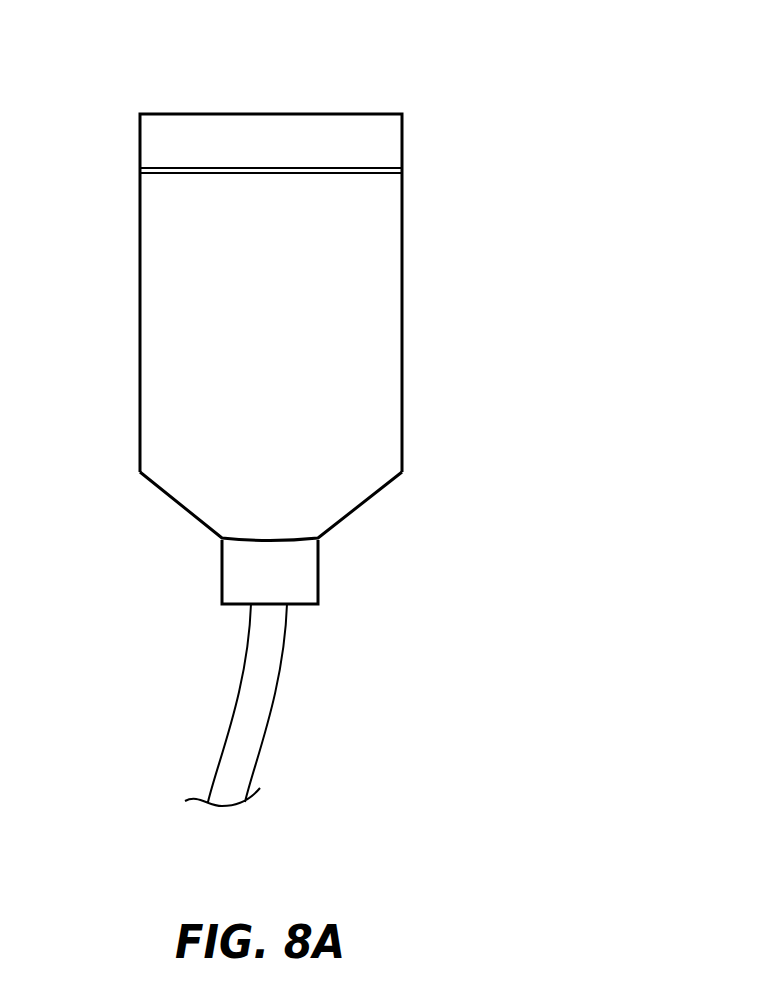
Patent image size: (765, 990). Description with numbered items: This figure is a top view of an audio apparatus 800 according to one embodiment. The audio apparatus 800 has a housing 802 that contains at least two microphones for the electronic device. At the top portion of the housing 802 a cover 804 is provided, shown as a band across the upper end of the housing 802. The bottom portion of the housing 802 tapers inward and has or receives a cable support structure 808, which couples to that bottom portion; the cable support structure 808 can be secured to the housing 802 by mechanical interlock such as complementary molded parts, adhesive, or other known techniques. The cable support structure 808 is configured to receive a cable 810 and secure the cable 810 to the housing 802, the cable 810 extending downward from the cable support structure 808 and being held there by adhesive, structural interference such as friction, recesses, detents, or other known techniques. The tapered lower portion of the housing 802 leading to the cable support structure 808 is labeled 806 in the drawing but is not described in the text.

The audio apparatus 800 is at (478, 90).
The housing 802 is at (180, 282).
The cover 804 is at (203, 140).
The tapered bottom portion 806 is at (180, 511).
The cable support structure 808 is at (320, 588).
The cable 810 is at (268, 711).